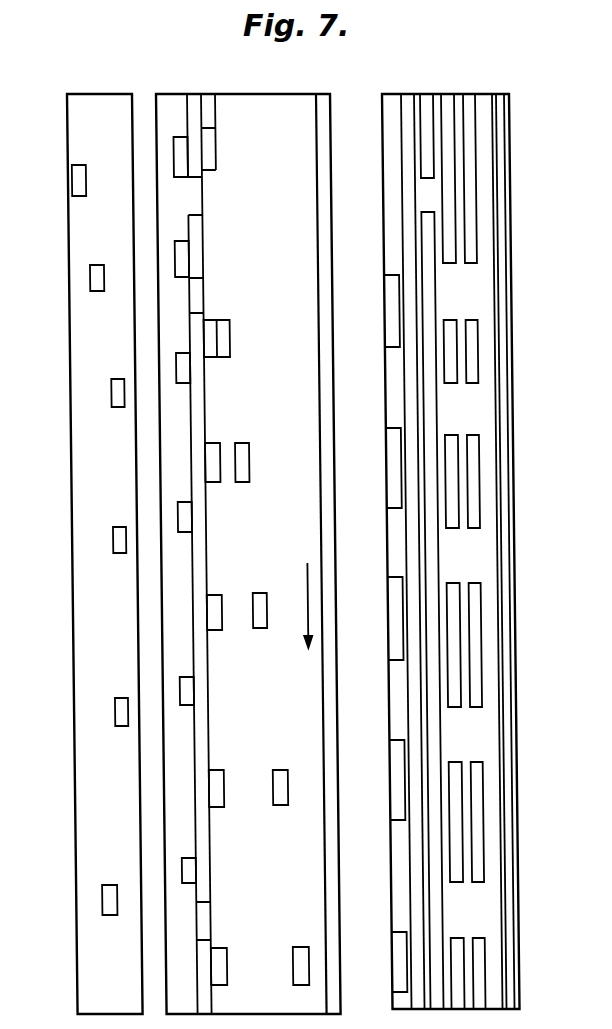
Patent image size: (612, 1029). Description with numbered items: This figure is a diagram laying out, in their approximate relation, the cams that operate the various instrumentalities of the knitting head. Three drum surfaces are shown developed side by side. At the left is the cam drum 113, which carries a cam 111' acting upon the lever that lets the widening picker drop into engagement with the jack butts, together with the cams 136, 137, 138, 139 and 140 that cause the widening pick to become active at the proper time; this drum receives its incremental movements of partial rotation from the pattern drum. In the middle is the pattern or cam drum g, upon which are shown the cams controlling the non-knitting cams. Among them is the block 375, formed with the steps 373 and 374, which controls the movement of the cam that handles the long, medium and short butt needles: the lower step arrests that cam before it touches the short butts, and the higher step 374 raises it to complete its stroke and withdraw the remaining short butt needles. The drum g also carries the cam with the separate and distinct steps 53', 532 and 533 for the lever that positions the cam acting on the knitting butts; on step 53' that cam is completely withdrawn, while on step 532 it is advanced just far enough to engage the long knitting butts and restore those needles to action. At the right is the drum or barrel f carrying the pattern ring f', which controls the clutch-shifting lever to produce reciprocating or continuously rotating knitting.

The cam drum 113 is at (92, 101).
The cam 111' is at (53, 180).
The cam 140 is at (88, 280).
The cam 138 is at (108, 395).
The cam 137 is at (108, 542).
The cam 136 is at (108, 712).
The cam 139 is at (93, 900).
The step 374 is at (215, 113).
The block 375 is at (215, 134).
The step 373 is at (215, 154).
The step 533 is at (194, 194).
The step 532 is at (198, 295).
The step 53' is at (243, 652).
The pattern and cam drum g is at (300, 512).
The pattern drum f is at (491, 551).
The pattern ring f' is at (523, 551).